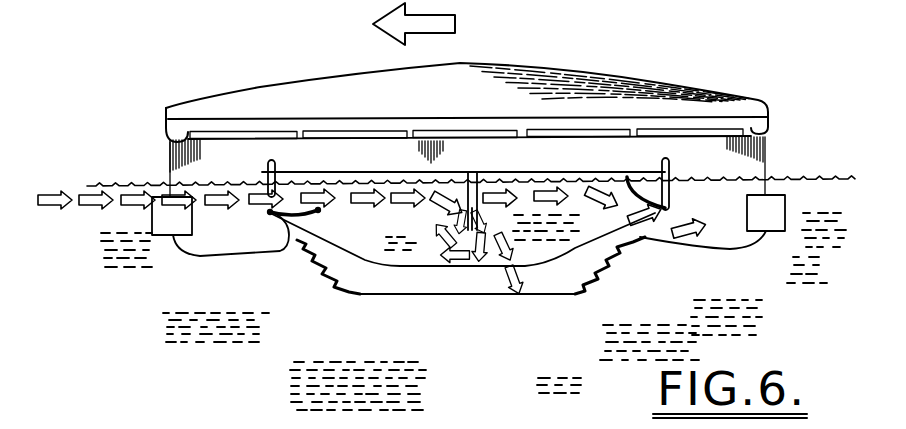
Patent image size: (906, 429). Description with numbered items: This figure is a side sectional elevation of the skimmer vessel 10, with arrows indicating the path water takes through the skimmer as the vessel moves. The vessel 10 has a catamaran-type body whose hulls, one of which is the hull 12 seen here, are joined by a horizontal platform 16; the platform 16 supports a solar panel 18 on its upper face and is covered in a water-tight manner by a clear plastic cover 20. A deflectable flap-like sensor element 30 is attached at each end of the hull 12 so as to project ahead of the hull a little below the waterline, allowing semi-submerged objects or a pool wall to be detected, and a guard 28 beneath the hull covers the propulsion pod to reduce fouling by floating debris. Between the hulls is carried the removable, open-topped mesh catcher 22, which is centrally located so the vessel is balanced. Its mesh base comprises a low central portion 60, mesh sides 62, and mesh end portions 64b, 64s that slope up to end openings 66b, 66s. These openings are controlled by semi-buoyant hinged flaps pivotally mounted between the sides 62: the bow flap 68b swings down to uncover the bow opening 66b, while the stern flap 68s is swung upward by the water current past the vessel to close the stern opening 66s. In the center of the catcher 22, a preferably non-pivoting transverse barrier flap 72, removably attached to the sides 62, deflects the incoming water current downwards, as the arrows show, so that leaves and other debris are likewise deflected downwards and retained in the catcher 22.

The vessel 10 is at (240, 70).
The hull 12 is at (745, 163).
The horizontal platform 16 is at (192, 147).
The solar panel 18 is at (477, 110).
The clear plastic cover 20 is at (614, 62).
The catcher 22 is at (374, 242).
The guard 28 is at (427, 296).
The sensor element 30 is at (159, 219).
The low central portion 60 is at (477, 266).
The mesh sides 62 is at (573, 290).
The bow mesh end portion 64b is at (286, 255).
The stern mesh end portion 64s is at (642, 240).
The bow opening 66b is at (269, 180).
The stern opening 66s is at (670, 190).
The bow flap 68b is at (319, 211).
The stern flap 68s is at (626, 177).
The barrier flap 72 is at (486, 150).